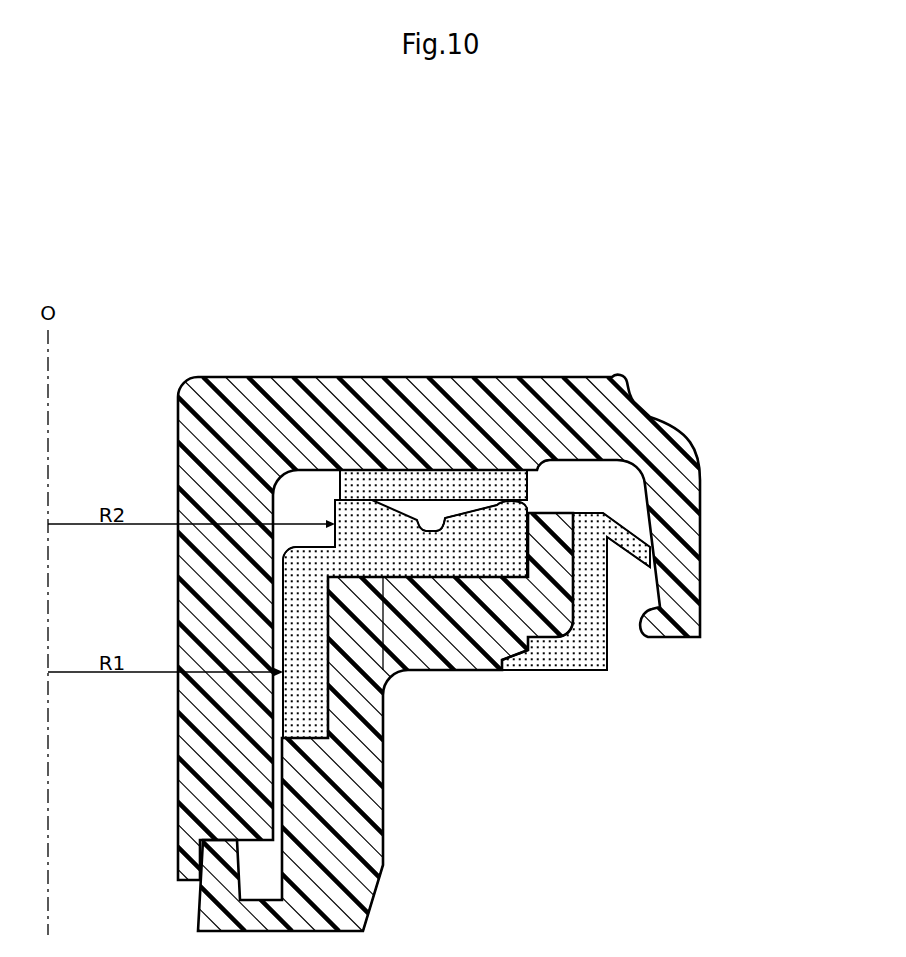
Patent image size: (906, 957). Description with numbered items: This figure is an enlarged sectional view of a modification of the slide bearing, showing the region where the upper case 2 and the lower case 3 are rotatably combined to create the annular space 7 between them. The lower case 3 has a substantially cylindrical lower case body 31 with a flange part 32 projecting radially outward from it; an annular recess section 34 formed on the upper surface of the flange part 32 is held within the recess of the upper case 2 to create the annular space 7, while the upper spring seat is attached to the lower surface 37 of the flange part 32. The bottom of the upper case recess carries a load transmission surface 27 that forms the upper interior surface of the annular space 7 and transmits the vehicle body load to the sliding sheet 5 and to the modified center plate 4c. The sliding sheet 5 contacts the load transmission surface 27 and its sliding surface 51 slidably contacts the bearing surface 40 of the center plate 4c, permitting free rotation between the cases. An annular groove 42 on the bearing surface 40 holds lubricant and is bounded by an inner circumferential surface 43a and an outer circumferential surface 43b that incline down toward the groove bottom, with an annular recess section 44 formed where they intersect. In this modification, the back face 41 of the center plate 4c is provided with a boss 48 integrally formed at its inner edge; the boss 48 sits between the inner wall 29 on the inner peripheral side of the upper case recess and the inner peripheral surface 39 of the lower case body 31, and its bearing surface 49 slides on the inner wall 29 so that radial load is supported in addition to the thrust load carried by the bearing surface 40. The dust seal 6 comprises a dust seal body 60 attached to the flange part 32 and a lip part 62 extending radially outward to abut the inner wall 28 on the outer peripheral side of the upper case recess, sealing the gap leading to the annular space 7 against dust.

The upper case 2 is at (370, 377).
The lower case 3 is at (373, 896).
The lower case body 31 is at (385, 828).
The sliding sheet 5 is at (558, 460).
The dust seal 6 is at (590, 672).
The annular space 7 is at (567, 488).
The load transmission surface 27 is at (427, 517).
The inner wall on the outer peripheral side 28 is at (640, 488).
The inner wall on the inner peripheral side 29 is at (283, 603).
The flange part 32 is at (660, 592).
The annular recess section 34 is at (340, 470).
The lower surface 37 is at (457, 673).
The inner peripheral surface 39 is at (327, 597).
The bearing surface 40 is at (500, 503).
The back face 41 is at (400, 577).
The annular groove 42 is at (470, 500).
The inner circumferential surface 43a is at (343, 505).
The outer circumferential surface 43b is at (507, 473).
The annular recess section 44 is at (441, 505).
The boss 48 is at (285, 692).
The bearing surface 49 is at (300, 711).
The sliding surface 51 is at (450, 505).
The dust seal body 60 is at (608, 640).
The lip part 62 is at (640, 540).
The center plate (modification) 4c is at (387, 565).